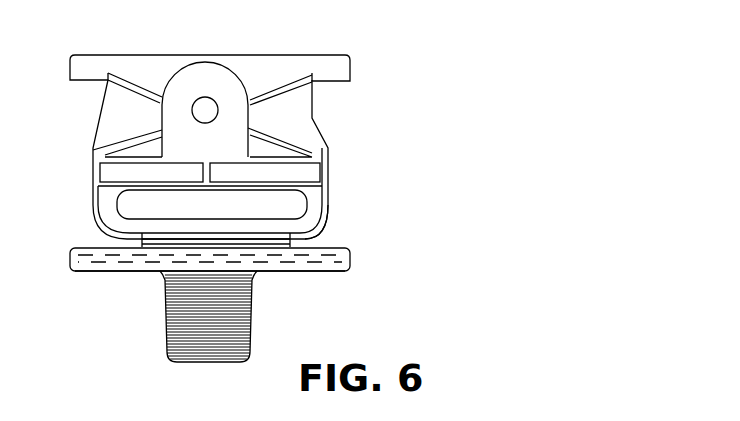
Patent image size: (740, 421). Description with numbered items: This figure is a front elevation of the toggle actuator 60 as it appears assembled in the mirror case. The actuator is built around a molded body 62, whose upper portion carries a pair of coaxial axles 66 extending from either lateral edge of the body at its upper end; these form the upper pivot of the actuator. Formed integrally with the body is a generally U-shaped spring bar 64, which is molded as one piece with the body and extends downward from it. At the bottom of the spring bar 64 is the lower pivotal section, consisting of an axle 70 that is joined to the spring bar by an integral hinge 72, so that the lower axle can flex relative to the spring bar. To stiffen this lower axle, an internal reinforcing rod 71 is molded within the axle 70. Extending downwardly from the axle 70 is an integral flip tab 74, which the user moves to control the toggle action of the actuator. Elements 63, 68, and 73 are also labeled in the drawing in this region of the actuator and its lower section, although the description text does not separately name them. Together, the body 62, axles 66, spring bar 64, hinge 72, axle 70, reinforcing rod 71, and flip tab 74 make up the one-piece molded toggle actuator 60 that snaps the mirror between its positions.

The toggle actuator 60 is at (378, 65).
The molded body 62 is at (127, 115).
The bottom wall 63 is at (212, 245).
The spring bar 64 is at (113, 197).
The coaxial axles 66 is at (84, 63).
The base plate 68 is at (115, 274).
The axle 70 is at (303, 262).
The internal reinforcing rod 71 is at (357, 267).
The integral hinge 72 is at (290, 244).
The spacer 73 is at (248, 245).
The flip tab 74 is at (173, 358).